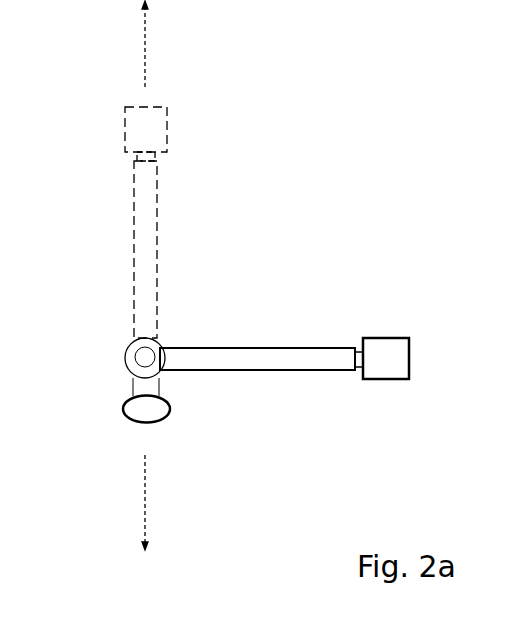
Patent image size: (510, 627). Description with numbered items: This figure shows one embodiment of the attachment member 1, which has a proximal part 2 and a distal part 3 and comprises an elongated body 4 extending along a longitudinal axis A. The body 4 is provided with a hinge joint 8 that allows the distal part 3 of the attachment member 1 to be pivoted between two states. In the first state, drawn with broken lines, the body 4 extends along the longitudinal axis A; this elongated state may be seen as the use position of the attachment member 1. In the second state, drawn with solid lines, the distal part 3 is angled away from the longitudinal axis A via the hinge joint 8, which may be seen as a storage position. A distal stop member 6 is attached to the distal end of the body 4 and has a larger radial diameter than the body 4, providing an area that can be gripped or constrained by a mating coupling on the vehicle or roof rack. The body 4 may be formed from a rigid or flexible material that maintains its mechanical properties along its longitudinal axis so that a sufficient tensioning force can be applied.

The longitudinal axis A is at (145, 62).
The attachment member 1 is at (312, 181).
The proximal part 2 is at (100, 407).
The distal part 3 is at (248, 253).
The body 4 is at (140, 267).
The distal stop member 6 is at (160, 123).
The hinge joint 8 is at (137, 358).